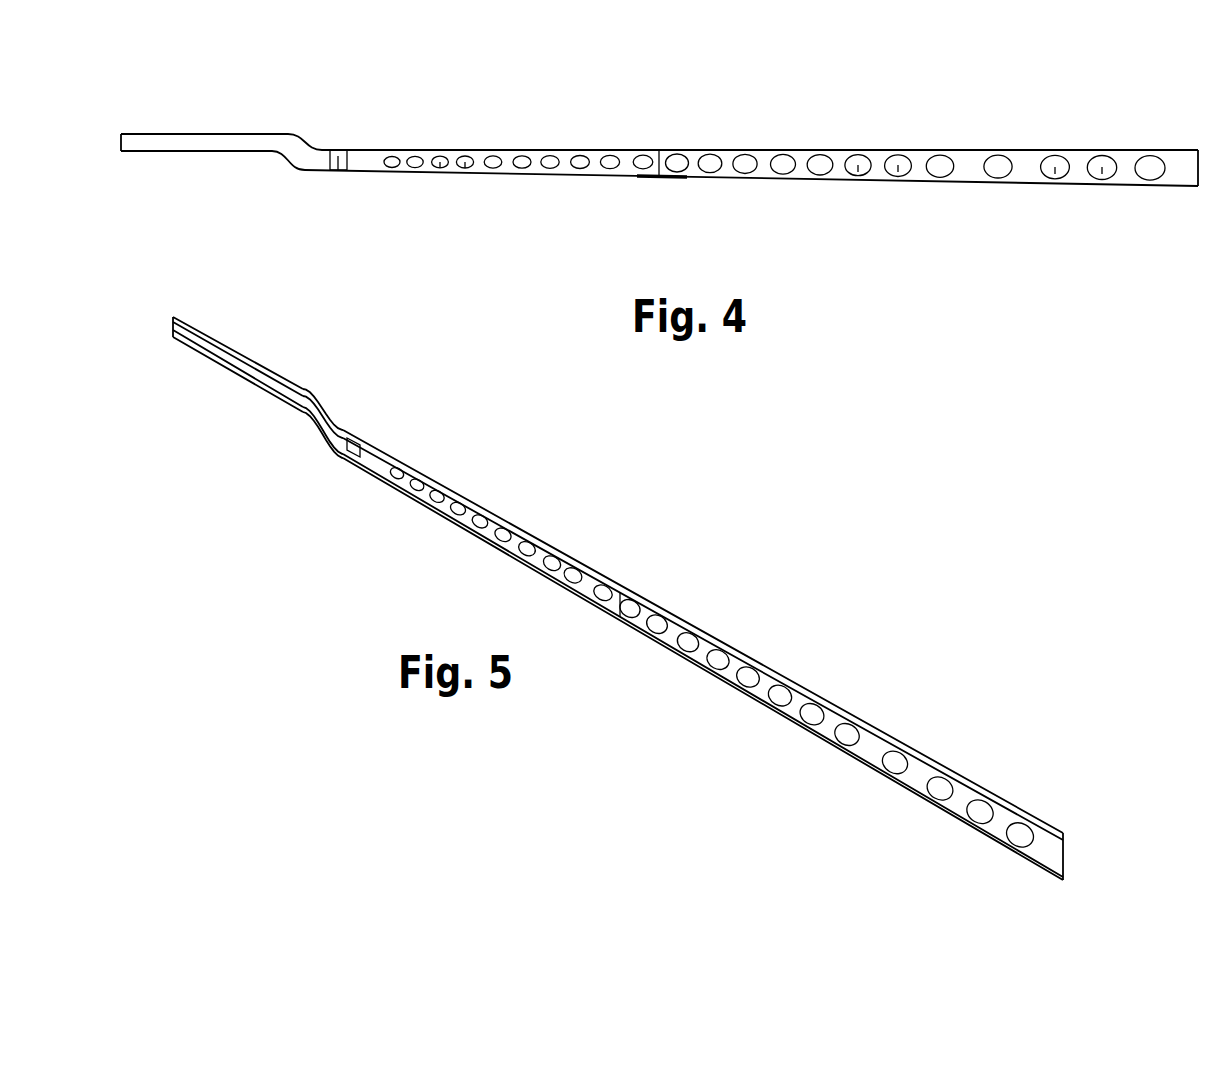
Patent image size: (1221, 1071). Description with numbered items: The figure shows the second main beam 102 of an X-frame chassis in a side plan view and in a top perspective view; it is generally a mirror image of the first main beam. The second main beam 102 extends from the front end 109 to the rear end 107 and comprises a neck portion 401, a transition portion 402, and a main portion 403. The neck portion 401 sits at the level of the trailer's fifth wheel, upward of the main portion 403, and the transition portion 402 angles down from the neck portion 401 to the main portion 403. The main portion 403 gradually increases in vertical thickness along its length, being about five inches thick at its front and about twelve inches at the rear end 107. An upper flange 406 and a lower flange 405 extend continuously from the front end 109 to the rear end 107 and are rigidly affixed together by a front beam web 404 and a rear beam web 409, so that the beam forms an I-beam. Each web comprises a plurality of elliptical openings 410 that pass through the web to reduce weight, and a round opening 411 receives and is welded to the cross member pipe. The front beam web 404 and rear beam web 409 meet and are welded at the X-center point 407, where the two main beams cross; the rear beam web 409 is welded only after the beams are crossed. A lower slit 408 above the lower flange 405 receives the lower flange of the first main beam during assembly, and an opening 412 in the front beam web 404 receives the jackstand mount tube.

In FIG. 4, the second main beam 102 is at (659, 132).
In FIG. 5, the second main beam 102 is at (625, 589).
In FIG. 4, the rear end 107 is at (1198, 148).
In FIG. 5, the rear end 107 is at (1063, 820).
In FIG. 4, the front end 109 is at (124, 133).
In FIG. 5, the front end 109 is at (180, 317).
In FIG. 4, the neck portion 401 is at (219, 123).
In FIG. 5, the neck portion 401 is at (258, 335).
In FIG. 4, the transition portion 402 is at (311, 128).
In FIG. 5, the transition portion 402 is at (349, 405).
In FIG. 4, the main portion 403 is at (751, 171).
In FIG. 5, the main portion 403 is at (679, 678).
In FIG. 4, the front beam web 404 is at (377, 156).
In FIG. 5, the front beam web 404 is at (380, 462).
In FIG. 4, the lower flange 405 is at (520, 177).
In FIG. 5, the lower flange 405 is at (1033, 873).
In FIG. 4, the upper flange 406 is at (601, 150).
In FIG. 5, the upper flange 406 is at (1040, 822).
In FIG. 4, the X-center point 407 is at (660, 180).
In FIG. 4, the lower slit 408 is at (644, 178).
In FIG. 4, the rear beam web 409 is at (803, 160).
In FIG. 5, the rear beam web 409 is at (917, 782).
In FIG. 4, the openings 410 is at (466, 164).
In FIG. 4, the round opening 411 is at (998, 170).
In FIG. 4, the opening 412 is at (338, 172).